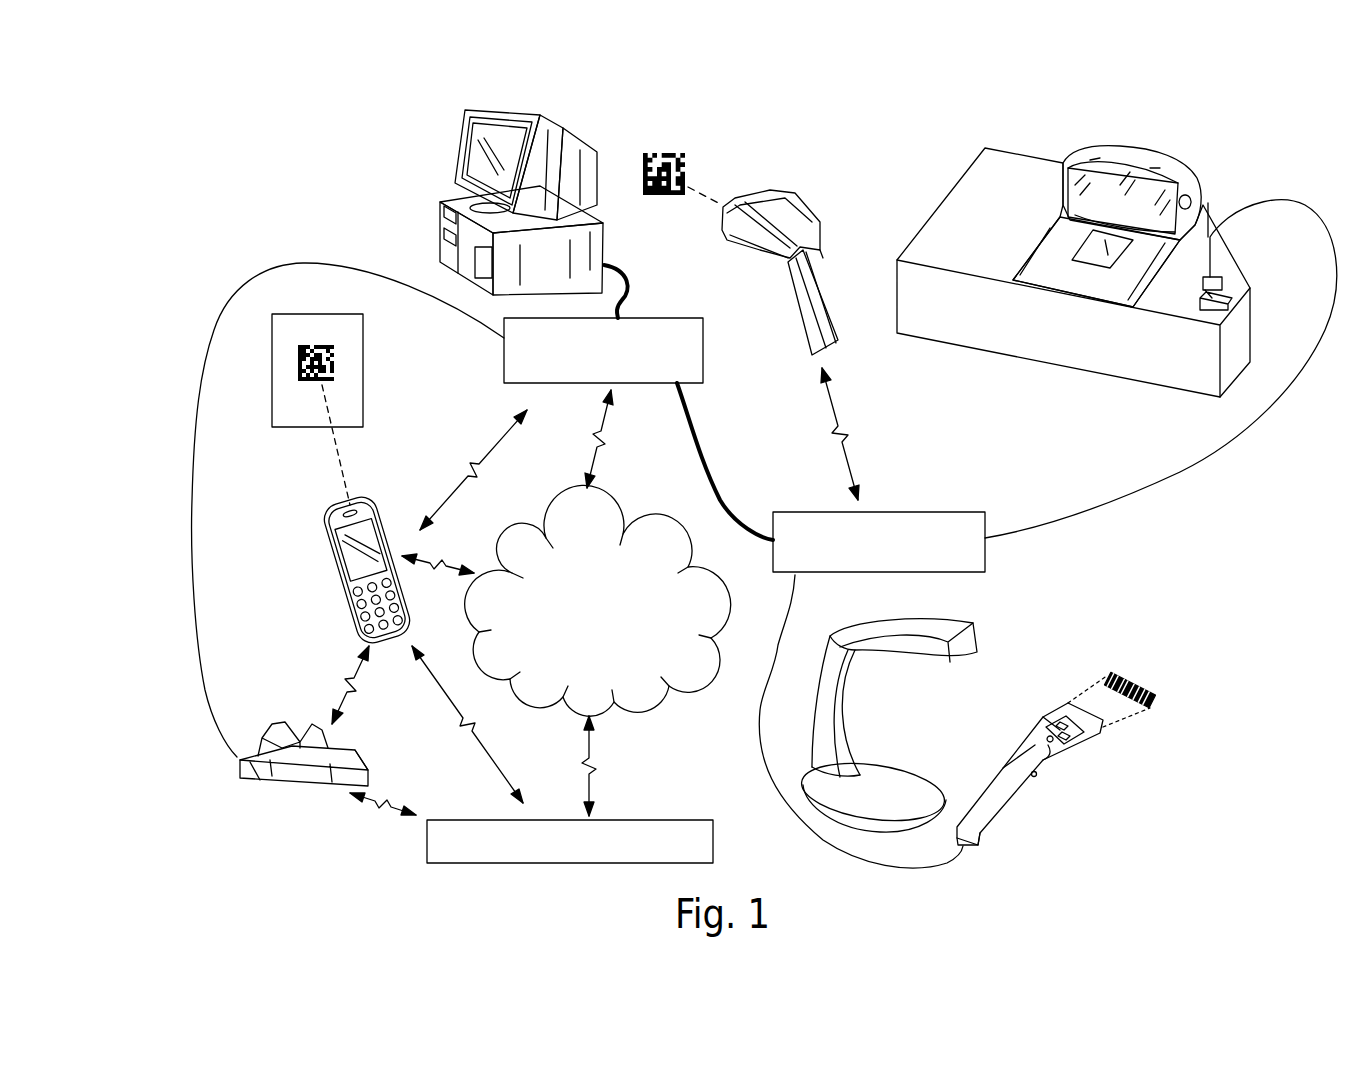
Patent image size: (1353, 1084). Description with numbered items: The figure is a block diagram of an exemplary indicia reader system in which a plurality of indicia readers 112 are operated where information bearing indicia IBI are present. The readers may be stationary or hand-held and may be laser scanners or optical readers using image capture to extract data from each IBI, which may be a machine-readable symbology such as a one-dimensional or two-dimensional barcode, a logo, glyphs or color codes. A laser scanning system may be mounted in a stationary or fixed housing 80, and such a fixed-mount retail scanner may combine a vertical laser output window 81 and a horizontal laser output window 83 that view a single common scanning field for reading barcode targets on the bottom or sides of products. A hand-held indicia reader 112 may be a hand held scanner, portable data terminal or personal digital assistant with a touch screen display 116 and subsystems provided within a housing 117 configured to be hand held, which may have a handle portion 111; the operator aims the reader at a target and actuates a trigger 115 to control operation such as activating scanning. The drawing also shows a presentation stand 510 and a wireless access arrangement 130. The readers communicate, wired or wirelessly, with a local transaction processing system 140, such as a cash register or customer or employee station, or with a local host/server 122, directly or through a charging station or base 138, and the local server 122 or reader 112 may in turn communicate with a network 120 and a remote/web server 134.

The stationary or fixed housing 80 is at (1033, 125).
The vertical laser output window 81 is at (1110, 160).
The horizontal laser output window 83 is at (1095, 262).
The handle portion 111 is at (806, 320).
The indicia reader 112 is at (318, 594).
The trigger 115 is at (378, 596).
The touch screen display 116 is at (1220, 278).
The housing 117 is at (345, 566).
The network 120 is at (692, 680).
The local host/server 122 is at (664, 318).
The wireless access system 130 is at (225, 824).
The remote/web server 134 is at (666, 820).
The charging station or base 138 is at (240, 772).
The local transaction processing system 140 is at (870, 512).
The presentation scanner stand 510 is at (990, 603).
The information bearing indicia IBI is at (363, 377).